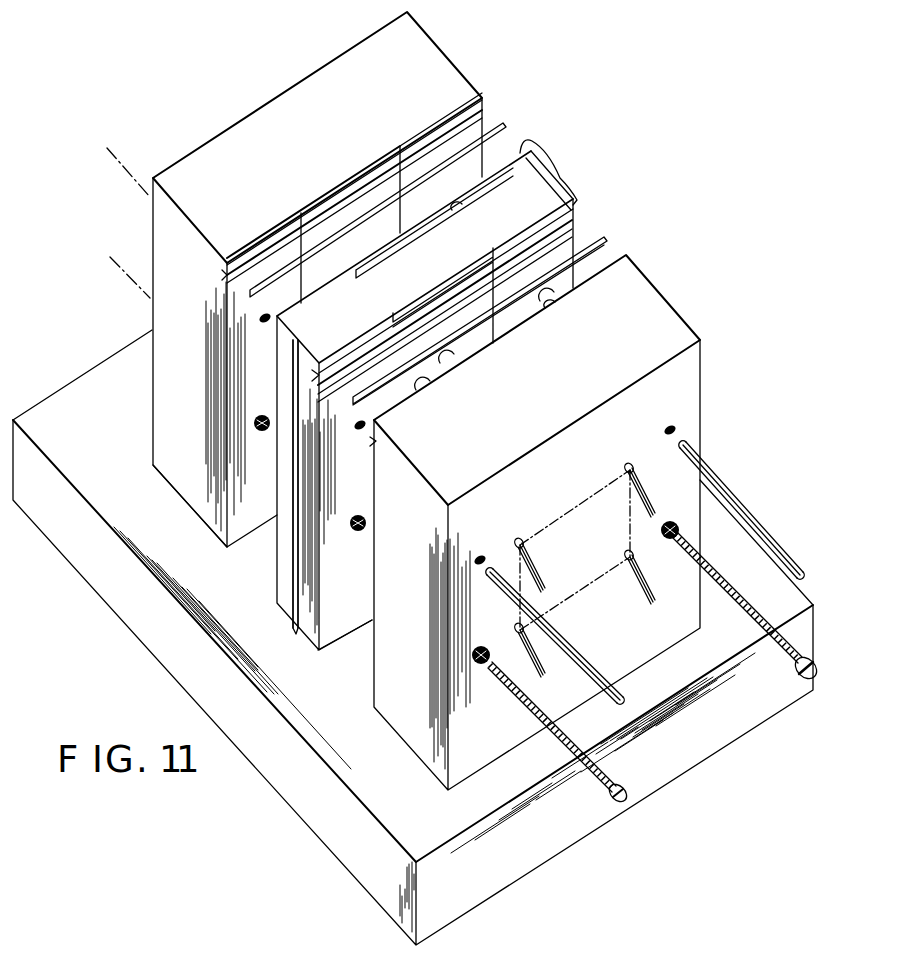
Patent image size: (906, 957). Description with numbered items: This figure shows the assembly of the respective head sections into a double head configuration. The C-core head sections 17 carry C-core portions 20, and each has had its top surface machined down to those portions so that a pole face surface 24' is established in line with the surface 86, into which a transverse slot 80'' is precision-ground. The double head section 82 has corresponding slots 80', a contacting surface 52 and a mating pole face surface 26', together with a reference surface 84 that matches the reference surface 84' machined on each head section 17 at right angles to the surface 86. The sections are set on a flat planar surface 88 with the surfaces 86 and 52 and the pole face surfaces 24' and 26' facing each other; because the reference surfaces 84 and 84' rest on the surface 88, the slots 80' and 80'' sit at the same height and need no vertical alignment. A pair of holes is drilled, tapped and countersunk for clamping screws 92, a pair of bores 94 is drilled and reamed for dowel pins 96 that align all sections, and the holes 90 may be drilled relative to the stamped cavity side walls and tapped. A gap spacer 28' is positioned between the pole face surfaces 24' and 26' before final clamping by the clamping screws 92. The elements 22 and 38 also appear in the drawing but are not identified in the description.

The C-core head section 17 is at (436, 50).
The C-core portion 20 is at (372, 172).
The strip 22 is at (389, 250).
The pole face surface 24' is at (400, 258).
The pole face surface 26' is at (564, 172).
The gap spacer 28' is at (467, 261).
The dowel pins 38 is at (628, 560).
The contacting surface 52 is at (322, 600).
The slot 80' is at (278, 360).
The transverse slot 80'' is at (283, 374).
The double head section 82 is at (582, 213).
The reference surface 84 is at (421, 412).
The reference surface 84' is at (268, 638).
The surface 86 is at (230, 547).
The flat planar surface 88 is at (318, 822).
The hole 90 is at (259, 432).
The clamping screw 92 is at (718, 587).
The bore 94 is at (458, 207).
The dowel pin 96 is at (756, 520).